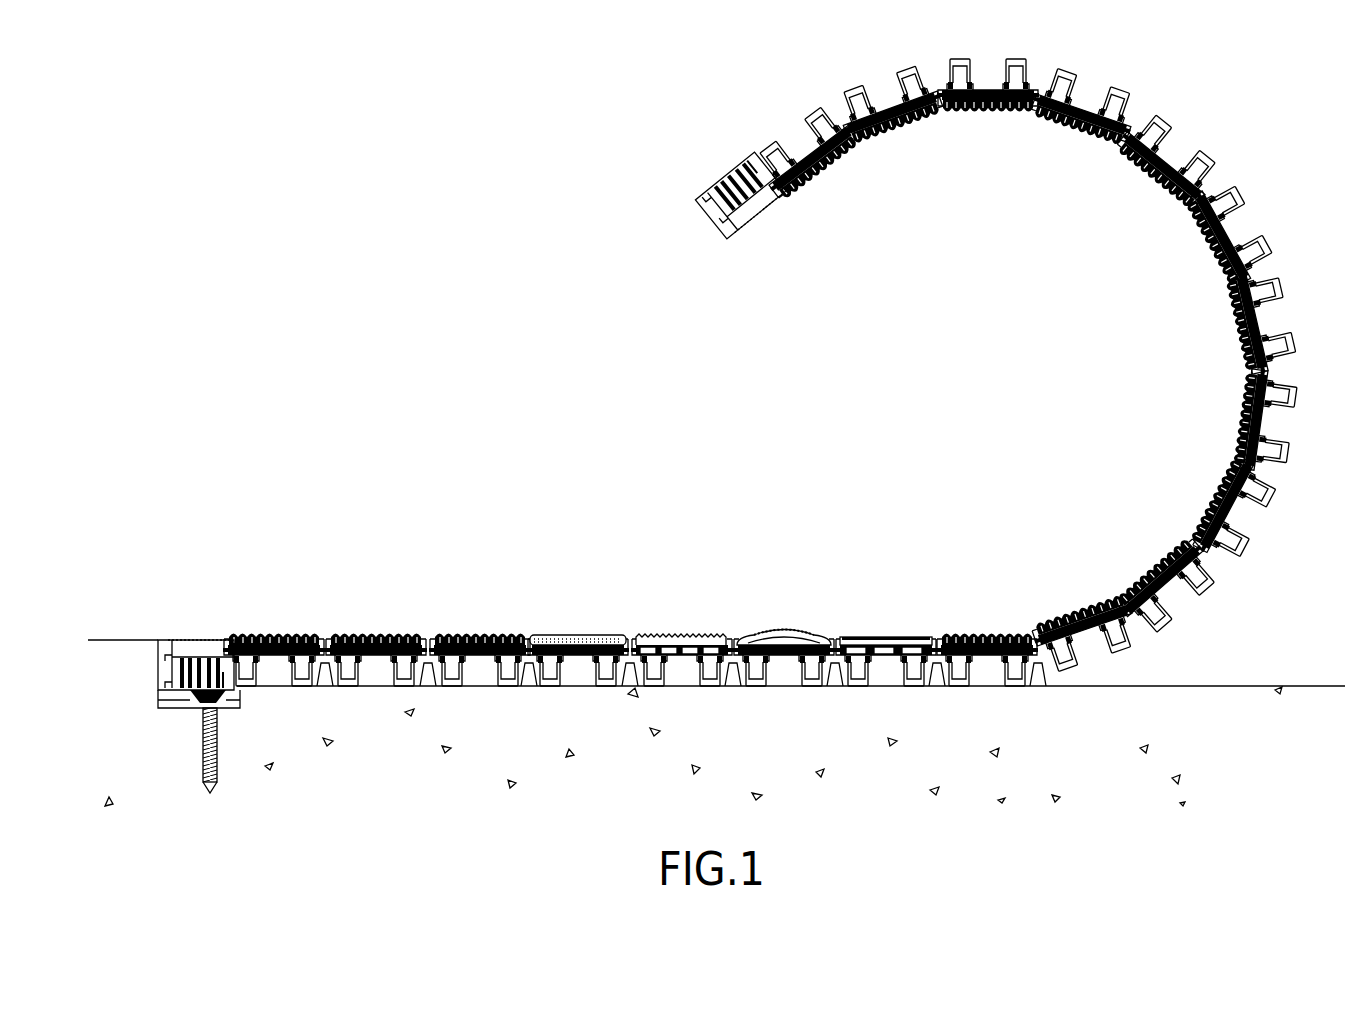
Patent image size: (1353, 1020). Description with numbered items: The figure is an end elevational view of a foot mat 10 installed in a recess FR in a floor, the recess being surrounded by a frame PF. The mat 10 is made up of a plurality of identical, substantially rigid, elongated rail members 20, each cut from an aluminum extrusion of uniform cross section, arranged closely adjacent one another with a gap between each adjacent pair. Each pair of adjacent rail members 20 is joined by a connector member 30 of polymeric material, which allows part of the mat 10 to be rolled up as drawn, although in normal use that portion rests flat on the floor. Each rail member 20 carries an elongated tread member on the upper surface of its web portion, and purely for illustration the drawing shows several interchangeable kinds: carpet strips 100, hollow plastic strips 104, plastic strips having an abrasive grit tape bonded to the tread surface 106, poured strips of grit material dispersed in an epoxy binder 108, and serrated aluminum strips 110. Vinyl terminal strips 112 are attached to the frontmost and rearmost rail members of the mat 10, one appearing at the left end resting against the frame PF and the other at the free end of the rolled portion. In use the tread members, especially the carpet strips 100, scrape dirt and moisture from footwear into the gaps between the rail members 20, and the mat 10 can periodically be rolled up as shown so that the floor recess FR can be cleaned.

The foot mat 10 is at (420, 537).
The rail member 20 is at (1176, 150).
The connector member 30 is at (506, 690).
The carpet strip 100 is at (367, 633).
The hollow plastic strip 104 is at (785, 633).
The plastic strip having abrasive grit tape 106 is at (882, 639).
The poured strip of grit material in epoxy binder 108 is at (578, 639).
The serrated aluminum strip 110 is at (680, 639).
The vinyl terminal strip 112 is at (208, 640).
The frame PF is at (163, 640).
The floor recess FR is at (1202, 686).